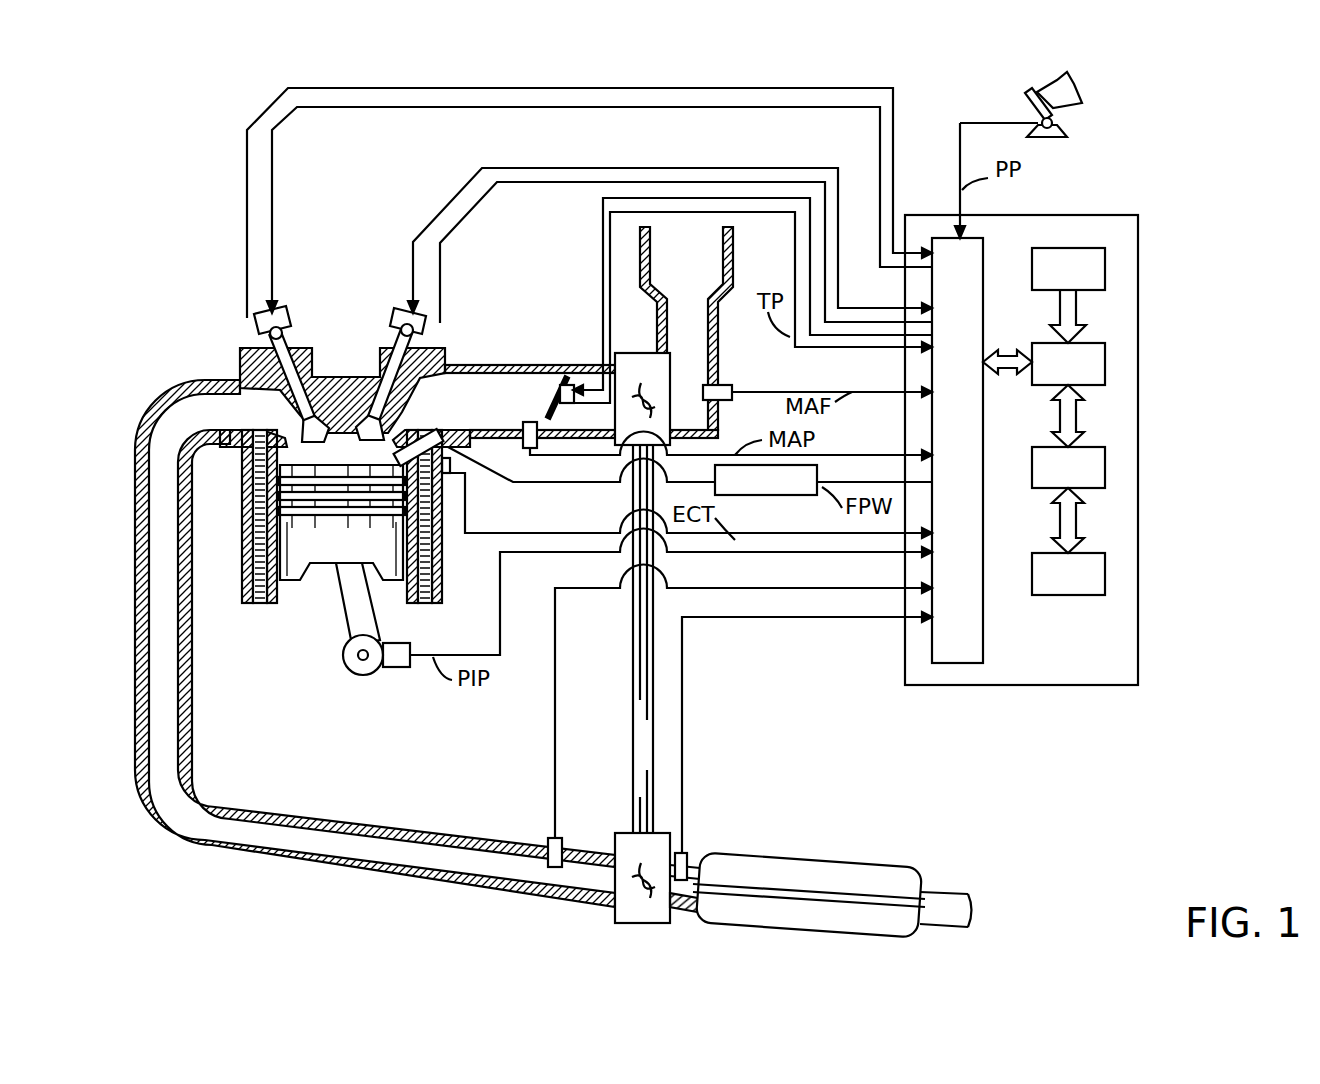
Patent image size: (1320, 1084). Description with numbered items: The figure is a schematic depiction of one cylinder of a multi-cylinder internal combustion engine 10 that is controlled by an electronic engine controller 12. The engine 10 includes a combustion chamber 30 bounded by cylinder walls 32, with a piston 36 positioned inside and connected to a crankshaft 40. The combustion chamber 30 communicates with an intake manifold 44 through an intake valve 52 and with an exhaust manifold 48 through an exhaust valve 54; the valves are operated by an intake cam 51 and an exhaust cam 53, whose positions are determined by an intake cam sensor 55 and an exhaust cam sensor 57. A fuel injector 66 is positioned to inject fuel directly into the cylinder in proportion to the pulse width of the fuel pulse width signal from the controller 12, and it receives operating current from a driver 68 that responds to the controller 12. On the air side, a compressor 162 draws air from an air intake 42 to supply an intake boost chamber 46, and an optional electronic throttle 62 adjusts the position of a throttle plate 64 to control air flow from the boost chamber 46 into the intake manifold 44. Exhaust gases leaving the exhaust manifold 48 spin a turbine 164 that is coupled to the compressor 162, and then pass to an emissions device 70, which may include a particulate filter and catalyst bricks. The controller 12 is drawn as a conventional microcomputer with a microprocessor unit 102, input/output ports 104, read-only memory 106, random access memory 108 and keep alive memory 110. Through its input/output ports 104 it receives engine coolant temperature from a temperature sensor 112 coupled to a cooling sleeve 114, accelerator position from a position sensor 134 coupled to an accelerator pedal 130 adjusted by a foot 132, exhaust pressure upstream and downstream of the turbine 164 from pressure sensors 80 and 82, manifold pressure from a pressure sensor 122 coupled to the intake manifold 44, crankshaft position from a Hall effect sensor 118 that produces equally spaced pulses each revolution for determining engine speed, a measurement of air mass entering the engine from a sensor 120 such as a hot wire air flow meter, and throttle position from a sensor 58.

The internal combustion engine 10 is at (172, 294).
The electronic engine controller 12 is at (1125, 215).
The combustion chamber 30 is at (342, 450).
The cylinder walls 32 is at (282, 595).
The piston 36 is at (323, 555).
The crankshaft 40 is at (352, 670).
The air intake 42 is at (686, 328).
The intake manifold 44 is at (581, 401).
The intake boost chamber 46 is at (596, 416).
The exhaust manifold 48 is at (375, 643).
The intake cam 51 is at (398, 316).
The intake valve 52 is at (388, 425).
The exhaust cam 53 is at (283, 317).
The exhaust valve 54 is at (268, 398).
The intake cam sensor 55 is at (425, 335).
The exhaust cam sensor 57 is at (265, 338).
The throttle position sensor 58 is at (585, 372).
The electronic throttle 62 is at (548, 382).
The throttle plate 64 is at (565, 378).
The fuel injector 66 is at (554, 468).
The driver 68 is at (812, 497).
The emissions device 70 is at (705, 930).
The pressure sensor 80 is at (548, 830).
The pressure sensor 82 is at (690, 853).
The microprocessor unit 102 is at (1105, 358).
The input/output ports 104 is at (985, 248).
The read-only memory 106 is at (1105, 268).
The random access memory 108 is at (1105, 466).
The keep alive memory 110 is at (1105, 572).
The temperature sensor 112 is at (450, 482).
The cooling sleeve 114 is at (435, 570).
The Hall effect sensor 118 is at (392, 668).
The air mass sensor 120 is at (730, 387).
The pressure sensor 122 is at (530, 422).
The accelerator pedal 130 is at (1030, 100).
The foot 132 is at (1082, 85).
The position sensor 134 is at (1062, 125).
The compressor 162 is at (648, 353).
The turbine 164 is at (610, 833).